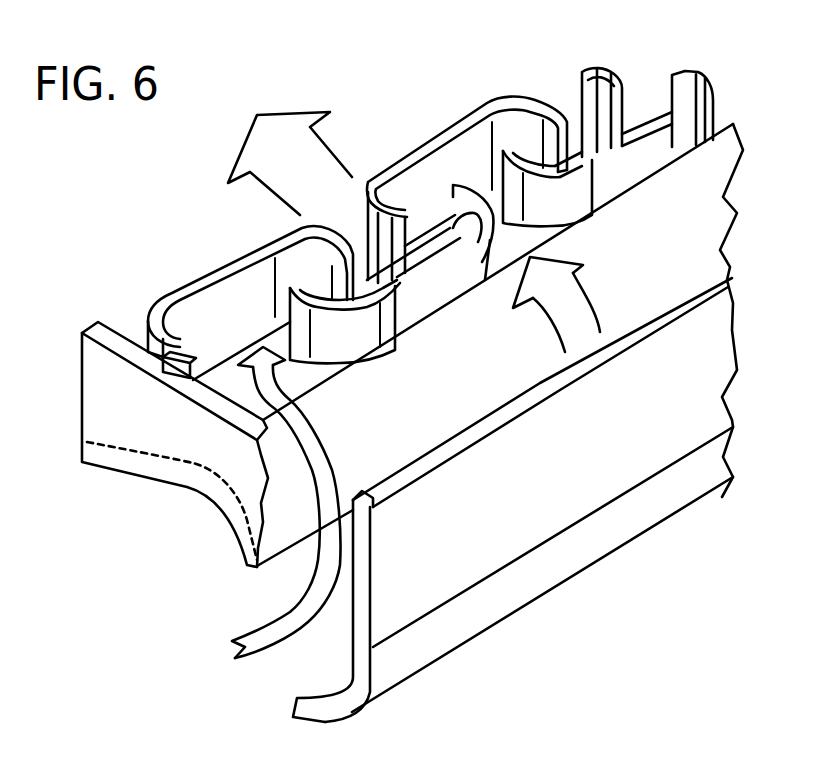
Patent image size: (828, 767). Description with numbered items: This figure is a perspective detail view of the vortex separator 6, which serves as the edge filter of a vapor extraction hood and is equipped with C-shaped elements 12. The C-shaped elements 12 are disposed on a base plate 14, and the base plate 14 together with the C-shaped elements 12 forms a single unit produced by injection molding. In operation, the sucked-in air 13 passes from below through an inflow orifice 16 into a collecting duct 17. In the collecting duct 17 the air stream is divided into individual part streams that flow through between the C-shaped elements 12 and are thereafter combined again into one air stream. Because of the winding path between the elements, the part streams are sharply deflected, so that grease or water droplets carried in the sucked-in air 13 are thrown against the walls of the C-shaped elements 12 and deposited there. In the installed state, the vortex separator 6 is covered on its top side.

The vortex separator 6 is at (178, 226).
The C-shaped elements 12 is at (427, 182).
The sucked-in air 13 is at (303, 172).
The base plate 14 is at (223, 378).
The inflow orifice 16 is at (278, 683).
The collecting duct 17 is at (393, 428).